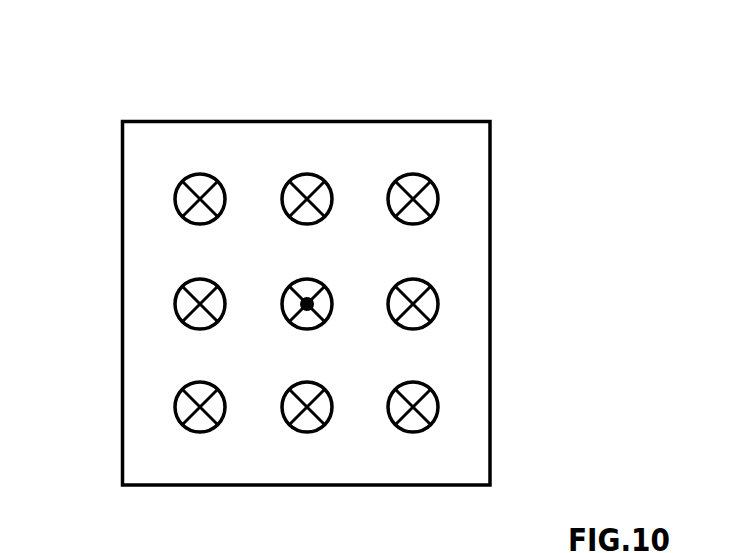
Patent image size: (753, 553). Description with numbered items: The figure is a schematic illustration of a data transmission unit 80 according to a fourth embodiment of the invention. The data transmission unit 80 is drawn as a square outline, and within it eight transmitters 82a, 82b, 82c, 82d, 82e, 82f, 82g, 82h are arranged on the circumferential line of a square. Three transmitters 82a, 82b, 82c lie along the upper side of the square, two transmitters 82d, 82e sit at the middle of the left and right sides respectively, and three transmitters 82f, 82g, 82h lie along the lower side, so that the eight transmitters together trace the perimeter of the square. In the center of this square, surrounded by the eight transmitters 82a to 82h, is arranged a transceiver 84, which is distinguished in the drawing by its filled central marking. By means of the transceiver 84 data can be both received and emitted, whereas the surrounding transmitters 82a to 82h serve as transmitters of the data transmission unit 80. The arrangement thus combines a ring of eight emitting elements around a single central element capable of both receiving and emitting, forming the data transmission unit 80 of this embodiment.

The data transmission unit 80 is at (520, 100).
The transmitter 82a is at (205, 188).
The transmitter 82b is at (313, 188).
The transmitter 82c is at (418, 188).
The transmitter 82d is at (190, 303).
The transmitter 82e is at (435, 302).
The transmitter 82f is at (203, 425).
The transmitter 82g is at (309, 425).
The transmitter 82h is at (415, 425).
The transceiver 84 is at (315, 303).